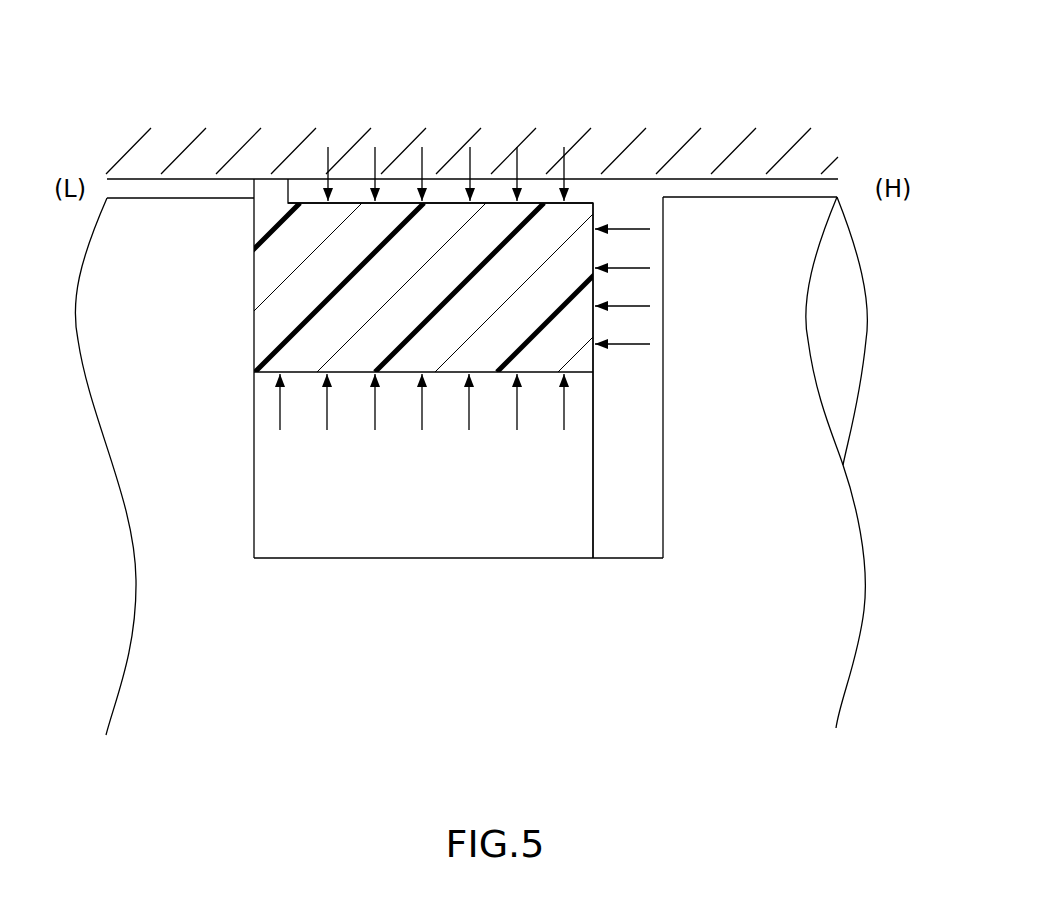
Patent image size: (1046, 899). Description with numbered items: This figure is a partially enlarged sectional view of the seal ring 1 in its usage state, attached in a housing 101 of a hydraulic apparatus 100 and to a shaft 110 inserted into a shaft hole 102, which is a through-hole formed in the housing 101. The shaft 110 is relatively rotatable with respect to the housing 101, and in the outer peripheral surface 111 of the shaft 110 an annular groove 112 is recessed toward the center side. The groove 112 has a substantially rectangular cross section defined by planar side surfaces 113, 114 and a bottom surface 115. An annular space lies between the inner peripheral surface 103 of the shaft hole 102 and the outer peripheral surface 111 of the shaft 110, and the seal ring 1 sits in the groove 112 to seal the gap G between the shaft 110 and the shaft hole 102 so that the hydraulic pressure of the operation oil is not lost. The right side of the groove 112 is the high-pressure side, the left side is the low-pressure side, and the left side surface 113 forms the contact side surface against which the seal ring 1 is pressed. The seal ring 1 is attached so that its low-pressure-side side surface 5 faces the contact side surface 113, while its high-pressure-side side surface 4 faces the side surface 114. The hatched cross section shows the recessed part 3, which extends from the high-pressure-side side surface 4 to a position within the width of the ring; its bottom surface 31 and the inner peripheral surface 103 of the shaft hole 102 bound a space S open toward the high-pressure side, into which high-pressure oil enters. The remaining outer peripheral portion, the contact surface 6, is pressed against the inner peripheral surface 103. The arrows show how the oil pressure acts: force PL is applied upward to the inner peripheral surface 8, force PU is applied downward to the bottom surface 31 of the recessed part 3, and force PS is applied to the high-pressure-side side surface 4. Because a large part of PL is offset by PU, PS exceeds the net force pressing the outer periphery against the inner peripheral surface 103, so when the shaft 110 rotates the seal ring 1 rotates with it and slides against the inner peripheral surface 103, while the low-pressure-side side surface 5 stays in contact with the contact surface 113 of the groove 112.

The seal ring 1 is at (569, 94).
The recessed part 3 is at (346, 178).
The bottom surface 31 is at (447, 203).
The high-pressure-side side surface 4 is at (594, 323).
The low-pressure-side side surface 5 is at (254, 278).
The contact surface 6 is at (267, 178).
The inner peripheral surface 8 is at (404, 373).
The hydraulic apparatus 100 is at (819, 146).
The housing 101 is at (211, 148).
The shaft hole 102 is at (830, 189).
The inner peripheral surface of the shaft hole 103 is at (613, 186).
The shaft 110 is at (866, 482).
The outer peripheral surface of the shaft 111 is at (771, 198).
The groove 112 is at (634, 192).
The side surface 113 is at (253, 469).
The side surface 114 is at (655, 429).
The bottom surface 115 is at (420, 558).
The space S is at (490, 197).
The gap G is at (736, 192).
The force PU is at (446, 152).
The force PL is at (422, 419).
The force PS is at (648, 286).